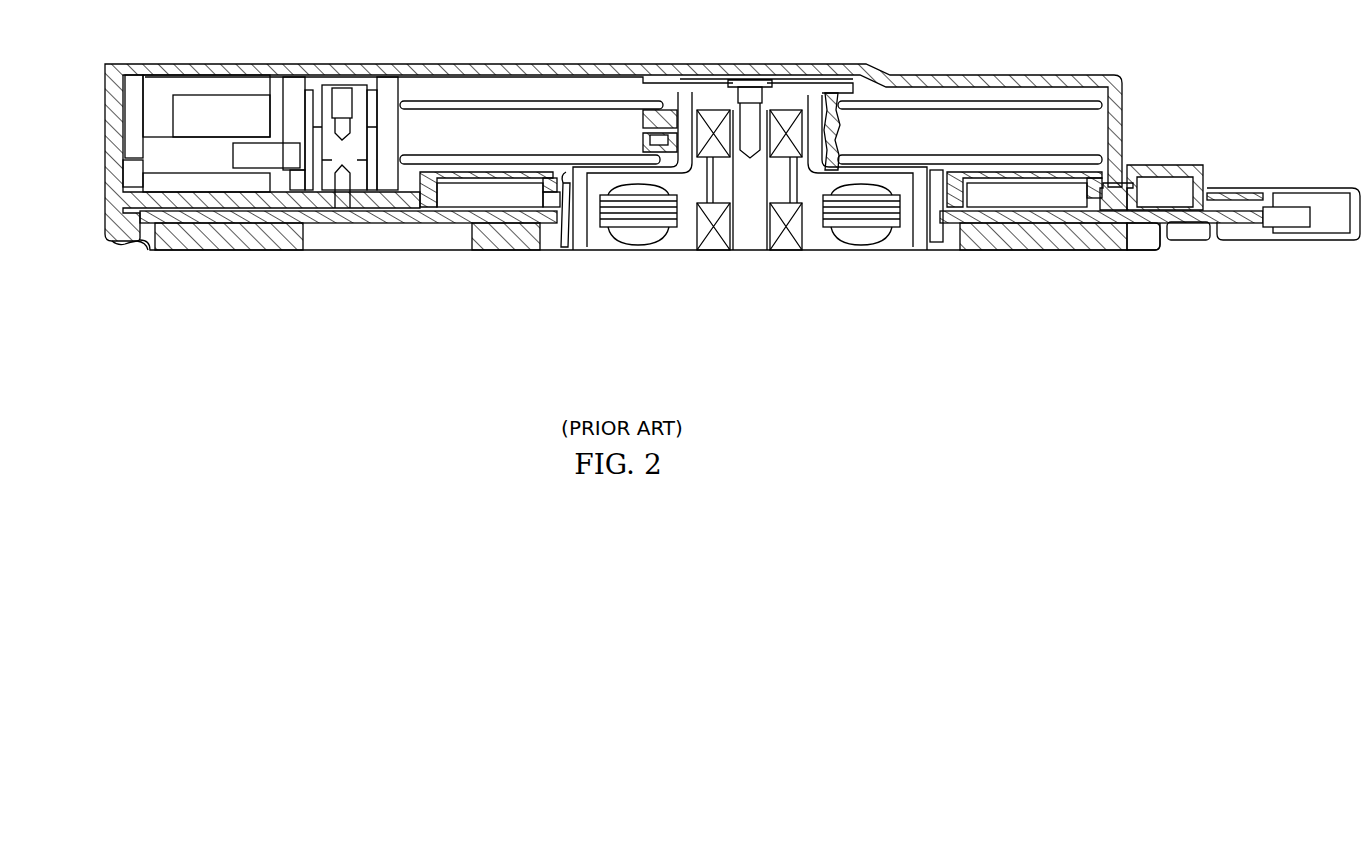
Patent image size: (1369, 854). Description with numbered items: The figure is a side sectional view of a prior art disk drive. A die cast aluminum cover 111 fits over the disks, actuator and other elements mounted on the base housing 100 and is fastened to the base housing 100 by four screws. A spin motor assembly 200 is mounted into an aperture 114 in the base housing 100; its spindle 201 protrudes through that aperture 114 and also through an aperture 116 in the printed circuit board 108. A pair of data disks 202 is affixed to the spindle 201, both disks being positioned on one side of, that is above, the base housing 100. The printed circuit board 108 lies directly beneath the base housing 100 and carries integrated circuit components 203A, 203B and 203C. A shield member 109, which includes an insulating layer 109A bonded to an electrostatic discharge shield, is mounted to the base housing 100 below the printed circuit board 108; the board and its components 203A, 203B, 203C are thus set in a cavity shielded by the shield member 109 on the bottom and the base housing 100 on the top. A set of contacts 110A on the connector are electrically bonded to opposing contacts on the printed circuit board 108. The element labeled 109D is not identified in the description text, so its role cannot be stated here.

The base housing 100 is at (495, 174).
The printed circuit board 108 is at (393, 234).
The shield member 109 is at (890, 250).
The insulating layer 109A is at (134, 244).
The bottom plate 109D is at (150, 252).
The contacts 110A is at (1165, 205).
The die cast aluminum cover 111 is at (1000, 80).
The aperture 114 is at (563, 232).
The aperture 116 is at (936, 232).
The spin motor assembly 200 is at (752, 259).
The spindle 201 is at (793, 93).
The data disks 202 is at (430, 156).
The integrated circuit component 203A is at (230, 246).
The integrated circuit component 203B is at (502, 244).
The integrated circuit component 203C is at (1048, 245).